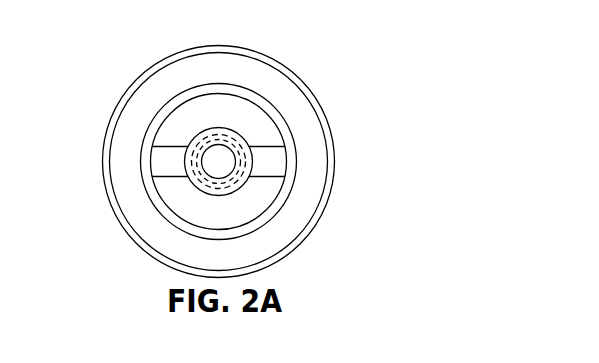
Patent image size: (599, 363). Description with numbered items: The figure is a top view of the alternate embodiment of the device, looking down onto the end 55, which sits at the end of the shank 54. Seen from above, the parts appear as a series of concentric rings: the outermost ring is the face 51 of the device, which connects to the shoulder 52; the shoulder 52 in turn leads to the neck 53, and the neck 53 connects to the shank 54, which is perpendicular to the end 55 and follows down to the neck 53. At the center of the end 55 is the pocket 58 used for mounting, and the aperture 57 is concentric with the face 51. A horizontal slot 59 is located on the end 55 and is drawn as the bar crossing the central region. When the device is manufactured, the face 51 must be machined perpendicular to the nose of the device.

The face 51 is at (103, 215).
The shoulder 52 is at (305, 203).
The neck 53 is at (265, 225).
The shank 54 is at (138, 128).
The end 55 is at (190, 143).
The aperture 57 is at (218, 160).
The pocket 58 is at (243, 147).
The horizontal slot 59 is at (268, 168).